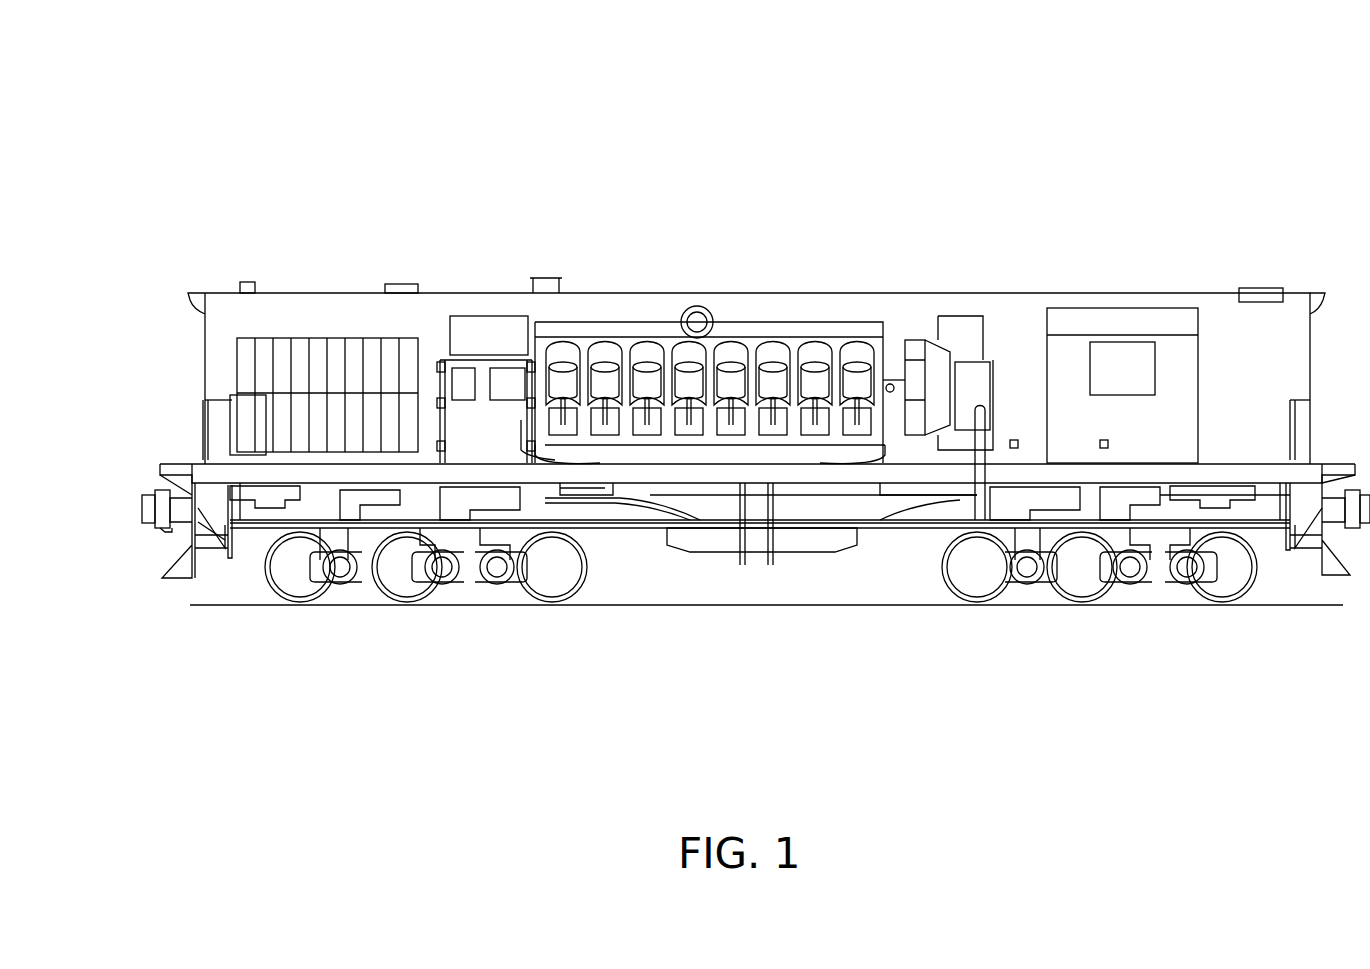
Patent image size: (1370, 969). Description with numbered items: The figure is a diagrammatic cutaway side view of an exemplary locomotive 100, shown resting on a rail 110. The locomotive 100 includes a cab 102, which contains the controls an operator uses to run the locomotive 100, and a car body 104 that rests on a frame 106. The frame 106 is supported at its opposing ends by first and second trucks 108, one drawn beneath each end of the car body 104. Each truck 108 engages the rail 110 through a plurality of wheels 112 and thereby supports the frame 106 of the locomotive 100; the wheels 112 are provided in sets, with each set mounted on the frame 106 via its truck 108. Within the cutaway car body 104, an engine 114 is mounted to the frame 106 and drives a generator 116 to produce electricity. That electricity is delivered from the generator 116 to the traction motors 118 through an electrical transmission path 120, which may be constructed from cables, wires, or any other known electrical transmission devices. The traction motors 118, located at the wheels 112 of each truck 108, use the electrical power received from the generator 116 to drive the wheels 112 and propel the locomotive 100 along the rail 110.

The locomotive 100 is at (367, 145).
The cab 102 is at (1183, 275).
The car body 104 is at (735, 272).
The frame 106 is at (138, 458).
The truck 108 is at (563, 685).
The rail 110 is at (762, 625).
The wheels 112 is at (285, 605).
The engine 114 is at (614, 322).
The generator 116 is at (928, 340).
The traction motors 118 is at (340, 584).
The electrical transmission path 120 is at (882, 525).